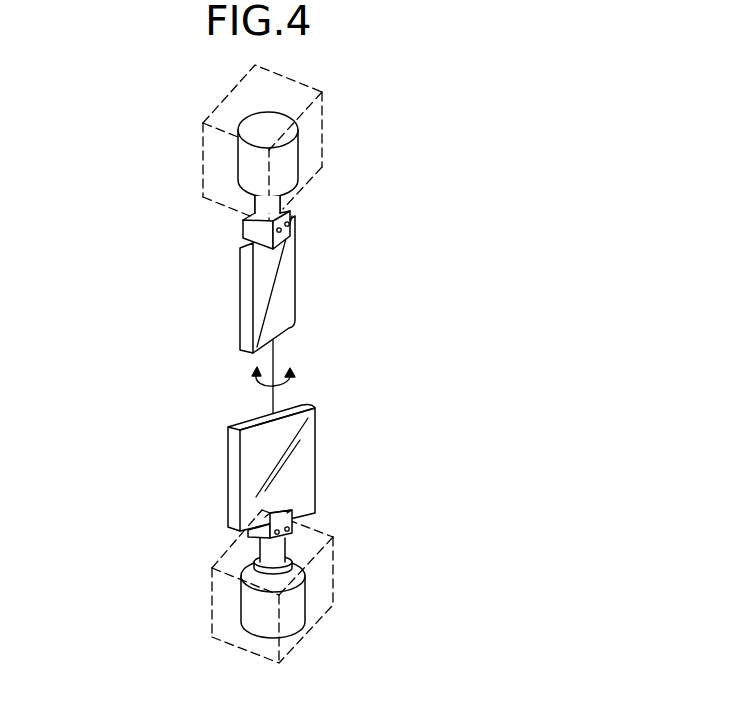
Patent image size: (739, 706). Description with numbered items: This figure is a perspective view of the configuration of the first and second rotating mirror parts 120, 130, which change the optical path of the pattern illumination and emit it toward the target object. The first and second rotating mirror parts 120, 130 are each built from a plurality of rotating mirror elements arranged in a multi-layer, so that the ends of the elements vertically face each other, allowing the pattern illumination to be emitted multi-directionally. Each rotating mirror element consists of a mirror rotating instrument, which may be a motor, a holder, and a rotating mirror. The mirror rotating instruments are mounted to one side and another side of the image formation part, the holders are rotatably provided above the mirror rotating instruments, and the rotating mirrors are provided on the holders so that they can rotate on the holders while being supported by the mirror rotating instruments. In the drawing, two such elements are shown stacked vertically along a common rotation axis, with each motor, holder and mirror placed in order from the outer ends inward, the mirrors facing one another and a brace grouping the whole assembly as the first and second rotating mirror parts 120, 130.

The first rotating mirror part 120 is at (347, 364).
The second rotating mirror part 130 is at (482, 233).